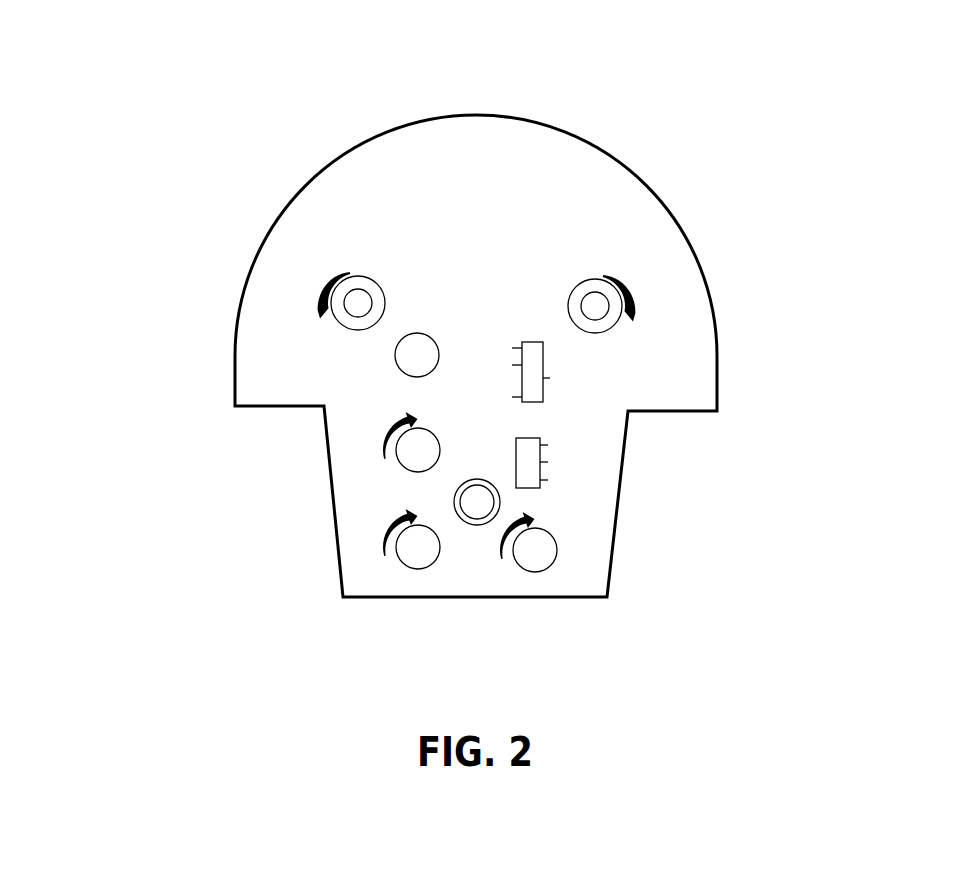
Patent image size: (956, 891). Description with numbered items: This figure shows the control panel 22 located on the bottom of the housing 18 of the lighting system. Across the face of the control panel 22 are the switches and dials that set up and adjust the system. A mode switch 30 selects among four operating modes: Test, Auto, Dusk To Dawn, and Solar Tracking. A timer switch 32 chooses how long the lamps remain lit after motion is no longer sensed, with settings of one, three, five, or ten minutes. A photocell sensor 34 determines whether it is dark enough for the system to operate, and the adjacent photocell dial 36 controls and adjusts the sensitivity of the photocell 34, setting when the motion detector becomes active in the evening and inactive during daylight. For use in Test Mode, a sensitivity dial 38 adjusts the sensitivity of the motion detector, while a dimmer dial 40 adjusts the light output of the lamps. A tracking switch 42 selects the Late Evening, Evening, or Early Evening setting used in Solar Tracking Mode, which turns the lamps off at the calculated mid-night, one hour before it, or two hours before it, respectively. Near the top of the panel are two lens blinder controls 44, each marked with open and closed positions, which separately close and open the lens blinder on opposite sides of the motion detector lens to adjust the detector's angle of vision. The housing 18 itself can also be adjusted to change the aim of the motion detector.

The housing 18 is at (338, 123).
The control panel 22 is at (453, 201).
The mode switch 30 is at (534, 378).
The timer switch 32 is at (417, 351).
The photocell sensor 34 is at (477, 508).
The photocell dial 36 is at (397, 460).
The sensitivity dial 38 is at (418, 547).
The dimmer dial 40 is at (535, 550).
The tracking switch 42 is at (535, 461).
The lens blinder controls 44 is at (338, 297).